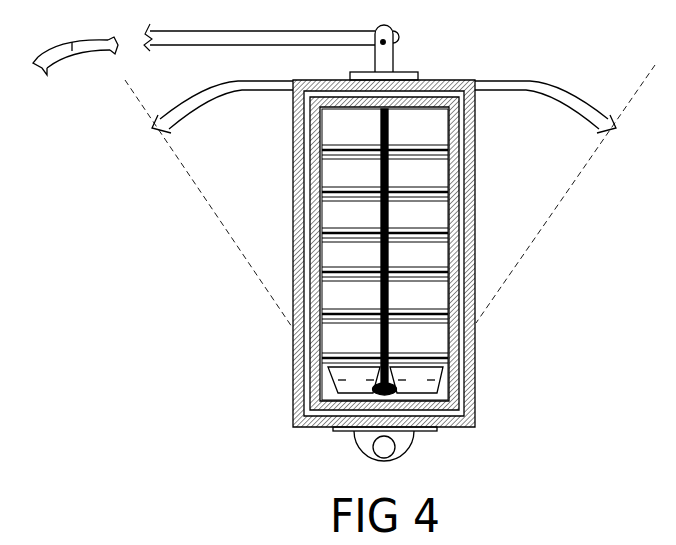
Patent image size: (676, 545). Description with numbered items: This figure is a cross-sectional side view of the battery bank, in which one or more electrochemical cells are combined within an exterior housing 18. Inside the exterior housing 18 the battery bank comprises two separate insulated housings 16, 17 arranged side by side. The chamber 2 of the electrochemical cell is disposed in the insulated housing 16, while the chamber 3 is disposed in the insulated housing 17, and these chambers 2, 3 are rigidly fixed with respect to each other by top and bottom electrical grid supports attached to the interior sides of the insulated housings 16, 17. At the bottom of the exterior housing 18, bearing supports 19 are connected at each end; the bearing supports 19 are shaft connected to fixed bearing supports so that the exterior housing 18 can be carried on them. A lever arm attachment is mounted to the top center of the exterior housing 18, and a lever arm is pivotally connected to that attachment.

The chamber 2 is at (354, 381).
The chamber 3 is at (416, 381).
The insulated housing 16 is at (328, 145).
The insulated housing 17 is at (440, 145).
The exterior housing 18 is at (483, 340).
The bearing supports 19 is at (414, 453).